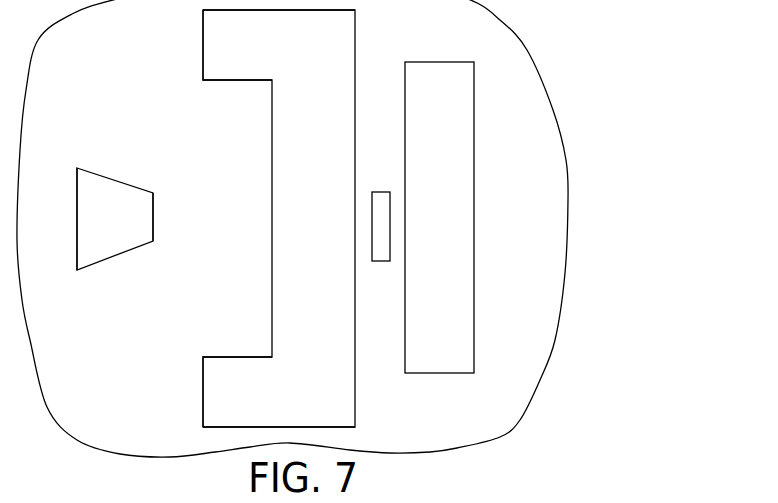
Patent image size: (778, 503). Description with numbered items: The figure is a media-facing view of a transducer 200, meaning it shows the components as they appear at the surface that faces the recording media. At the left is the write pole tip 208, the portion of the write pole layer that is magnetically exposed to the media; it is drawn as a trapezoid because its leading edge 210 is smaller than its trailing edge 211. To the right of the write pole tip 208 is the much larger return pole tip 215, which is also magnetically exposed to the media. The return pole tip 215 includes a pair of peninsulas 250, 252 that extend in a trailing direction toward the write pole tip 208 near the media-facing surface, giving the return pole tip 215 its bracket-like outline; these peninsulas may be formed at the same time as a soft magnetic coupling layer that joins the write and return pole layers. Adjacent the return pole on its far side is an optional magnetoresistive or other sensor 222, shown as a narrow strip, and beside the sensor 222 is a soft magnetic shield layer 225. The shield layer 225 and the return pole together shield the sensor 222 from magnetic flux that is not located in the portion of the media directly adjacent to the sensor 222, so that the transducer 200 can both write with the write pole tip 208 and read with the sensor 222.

The transducer 200 is at (578, 63).
The write pole tip 208 is at (139, 230).
The leading edge 210 is at (157, 239).
The trailing edge 211 is at (75, 182).
The return pole tip 215 is at (332, 230).
The sensor 222 is at (383, 261).
The soft magnetic shield layer 225 is at (459, 230).
The peninsula 250 is at (203, 49).
The peninsula 252 is at (203, 393).